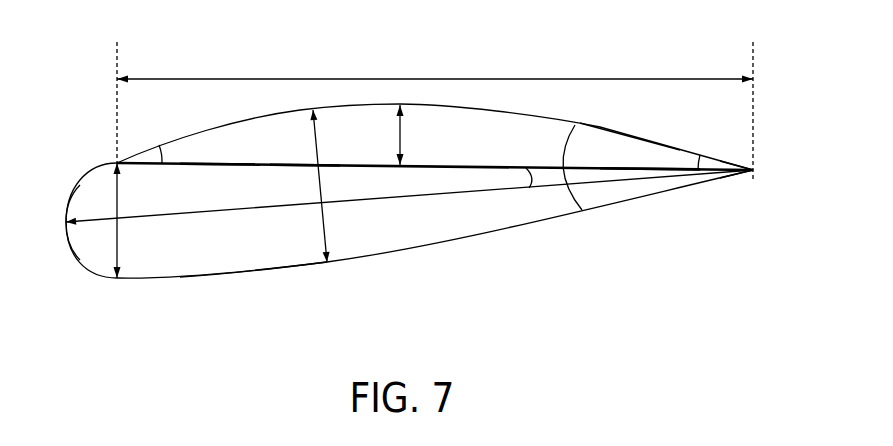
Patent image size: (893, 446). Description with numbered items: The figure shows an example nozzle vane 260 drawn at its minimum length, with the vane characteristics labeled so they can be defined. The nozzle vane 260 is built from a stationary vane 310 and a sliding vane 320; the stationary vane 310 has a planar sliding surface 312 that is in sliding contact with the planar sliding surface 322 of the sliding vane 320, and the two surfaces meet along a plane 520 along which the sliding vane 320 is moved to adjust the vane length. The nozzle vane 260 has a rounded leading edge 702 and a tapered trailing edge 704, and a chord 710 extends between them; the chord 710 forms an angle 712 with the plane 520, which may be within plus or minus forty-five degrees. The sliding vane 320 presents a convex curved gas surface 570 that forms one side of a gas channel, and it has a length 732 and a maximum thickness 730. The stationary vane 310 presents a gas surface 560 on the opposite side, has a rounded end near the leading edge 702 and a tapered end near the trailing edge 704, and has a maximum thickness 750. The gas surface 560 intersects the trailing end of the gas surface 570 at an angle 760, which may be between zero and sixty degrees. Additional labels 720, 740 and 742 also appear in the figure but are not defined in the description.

The nozzle vane 260 is at (52, 288).
The stationary vane 310 is at (194, 258).
The sliding surface 312 is at (305, 176).
The sliding vane 320 is at (493, 146).
The sliding surface 322 is at (647, 160).
The plane 520 is at (222, 176).
The gas surface 560 is at (294, 276).
The gas surface 570 is at (628, 118).
The leading edge 702 is at (48, 211).
The trailing edge 704 is at (765, 185).
The chord 710 is at (214, 211).
The angle 712 is at (527, 184).
The maximum thickness 720 is at (319, 181).
The maximum thickness 730 is at (414, 135).
The length 732 is at (435, 112).
The leading edge angle 740 is at (178, 153).
The trailing edge angle 742 is at (682, 161).
The maximum thickness 750 is at (118, 189).
The angle 760 is at (570, 197).